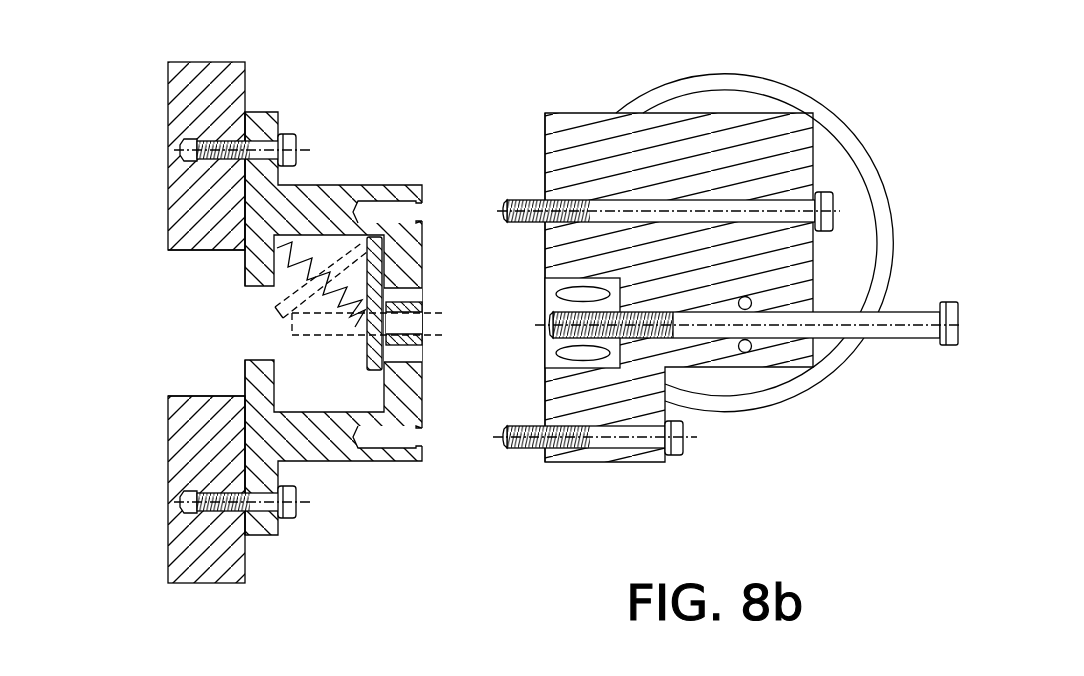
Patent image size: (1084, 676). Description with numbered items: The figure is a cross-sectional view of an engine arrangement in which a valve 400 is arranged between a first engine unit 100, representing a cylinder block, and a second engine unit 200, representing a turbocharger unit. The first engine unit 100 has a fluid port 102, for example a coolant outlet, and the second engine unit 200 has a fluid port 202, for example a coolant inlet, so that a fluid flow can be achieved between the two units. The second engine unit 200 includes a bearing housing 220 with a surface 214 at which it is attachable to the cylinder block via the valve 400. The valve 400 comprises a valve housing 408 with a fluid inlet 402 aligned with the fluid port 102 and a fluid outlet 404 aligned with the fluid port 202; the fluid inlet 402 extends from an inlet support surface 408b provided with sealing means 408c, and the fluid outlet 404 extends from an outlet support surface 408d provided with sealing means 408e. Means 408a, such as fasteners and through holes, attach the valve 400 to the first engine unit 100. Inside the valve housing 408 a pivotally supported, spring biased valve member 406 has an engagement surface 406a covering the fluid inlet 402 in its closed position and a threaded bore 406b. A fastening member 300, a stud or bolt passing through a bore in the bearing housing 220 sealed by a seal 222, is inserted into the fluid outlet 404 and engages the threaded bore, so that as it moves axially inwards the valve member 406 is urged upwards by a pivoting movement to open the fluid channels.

The first engine unit 100 is at (167, 124).
The fluid port 102 is at (200, 333).
The second engine unit 200 is at (727, 263).
The fluid port 202 is at (600, 363).
The surface 214 is at (545, 152).
The bearing housing 220 is at (740, 150).
The seal 222 is at (745, 353).
The fastening member 300 is at (846, 330).
The valve 400 is at (296, 324).
The fluid inlet 402 is at (296, 324).
The fluid outlet 404 is at (437, 297).
The valve member 406 is at (368, 350).
The engagement surface 406a is at (382, 351).
The threaded bore 406b is at (366, 347).
The valve housing 408 is at (408, 407).
The means for attaching 408a is at (298, 150).
The inlet support surface 408b is at (243, 433).
The sealing means 408c is at (245, 458).
The outlet support surface 408d is at (433, 262).
The sealing means 408e is at (388, 437).